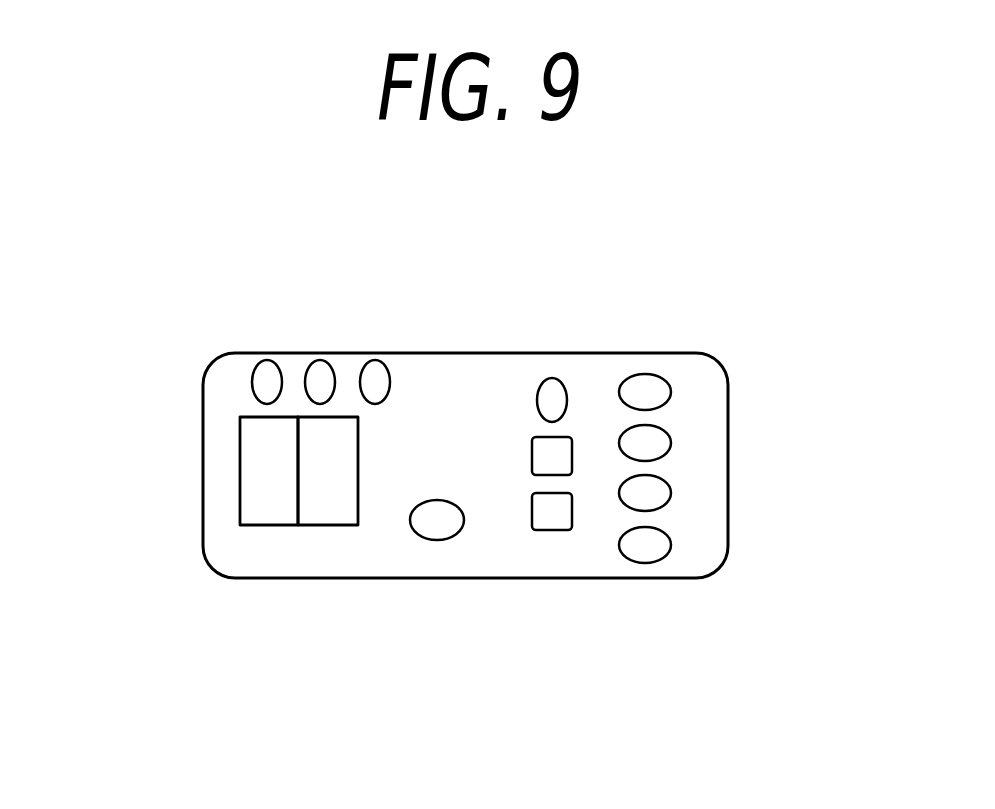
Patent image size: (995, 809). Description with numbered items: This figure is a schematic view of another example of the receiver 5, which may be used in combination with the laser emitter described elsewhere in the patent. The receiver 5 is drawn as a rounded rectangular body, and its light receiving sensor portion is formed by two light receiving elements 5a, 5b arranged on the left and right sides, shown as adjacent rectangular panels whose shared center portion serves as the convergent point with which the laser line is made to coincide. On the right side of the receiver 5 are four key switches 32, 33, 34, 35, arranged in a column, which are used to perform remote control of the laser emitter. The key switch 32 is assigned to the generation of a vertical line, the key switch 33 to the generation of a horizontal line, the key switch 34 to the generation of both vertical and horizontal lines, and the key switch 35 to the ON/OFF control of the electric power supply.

The receiver 5 is at (203, 437).
The light receiving element 5a is at (333, 500).
The light receiving element 5b is at (260, 495).
The key switch 32 is at (647, 387).
The key switch 33 is at (650, 440).
The key switch 34 is at (658, 495).
The key switch 35 is at (653, 552).